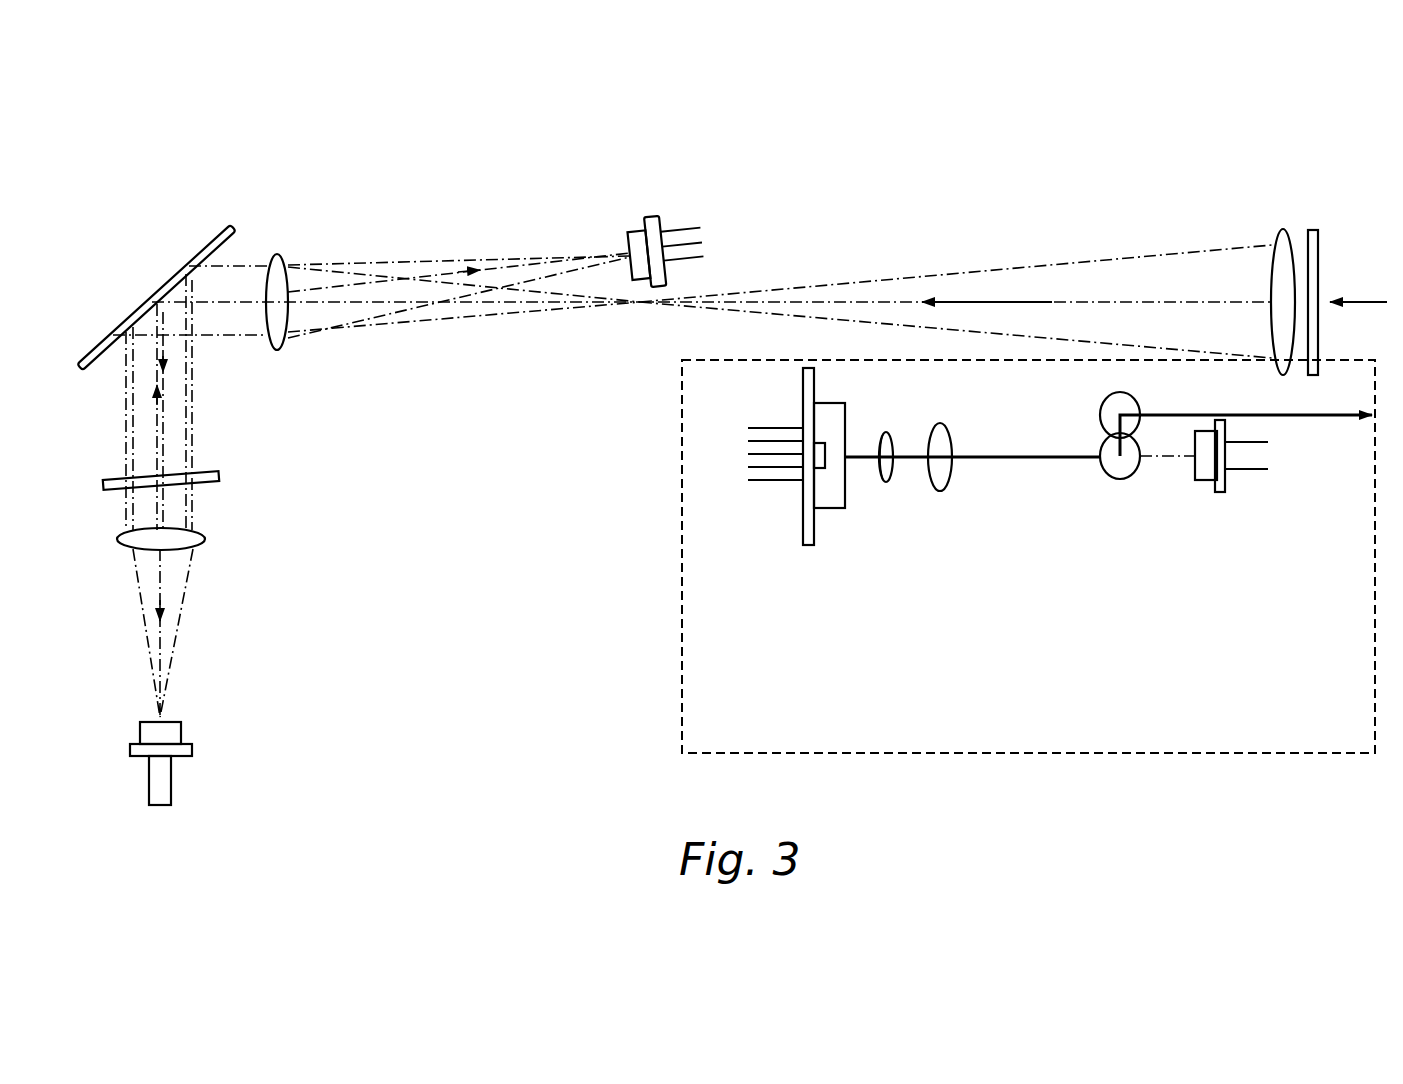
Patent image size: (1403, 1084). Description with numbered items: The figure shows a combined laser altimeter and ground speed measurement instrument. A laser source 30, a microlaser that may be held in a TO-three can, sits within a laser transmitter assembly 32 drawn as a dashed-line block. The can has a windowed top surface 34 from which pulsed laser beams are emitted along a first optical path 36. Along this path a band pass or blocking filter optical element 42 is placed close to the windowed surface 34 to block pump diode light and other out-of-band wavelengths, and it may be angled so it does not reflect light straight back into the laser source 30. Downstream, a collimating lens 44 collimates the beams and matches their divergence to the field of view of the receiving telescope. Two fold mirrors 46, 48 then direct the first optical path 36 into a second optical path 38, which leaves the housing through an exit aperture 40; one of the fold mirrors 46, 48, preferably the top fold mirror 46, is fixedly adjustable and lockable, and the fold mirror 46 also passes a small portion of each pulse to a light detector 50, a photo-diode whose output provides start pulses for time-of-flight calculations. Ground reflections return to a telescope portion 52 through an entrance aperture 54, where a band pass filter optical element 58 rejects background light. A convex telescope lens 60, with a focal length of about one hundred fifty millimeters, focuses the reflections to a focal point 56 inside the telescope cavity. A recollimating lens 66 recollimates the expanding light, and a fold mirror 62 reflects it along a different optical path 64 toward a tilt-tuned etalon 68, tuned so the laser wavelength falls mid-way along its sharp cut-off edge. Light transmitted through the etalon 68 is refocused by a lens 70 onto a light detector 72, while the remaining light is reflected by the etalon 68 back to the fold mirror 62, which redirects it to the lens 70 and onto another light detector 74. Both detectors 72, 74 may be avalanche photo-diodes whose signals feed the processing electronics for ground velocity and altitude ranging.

The laser source 30 is at (797, 562).
The laser transmitter assembly 32 is at (680, 570).
The windowed top surface 34 is at (845, 492).
The first optical path 36 is at (862, 453).
The second optical path 38 is at (1262, 413).
The exit aperture 40 is at (1370, 423).
The band pass or blocking filter optical element 42 is at (893, 445).
The collimating lens 44 is at (952, 477).
The fold mirror 46 is at (1112, 480).
The fold mirror 48 is at (1105, 403).
The light detector 50 is at (1215, 507).
The telescope portion 52 is at (810, 263).
The entrance aperture 54 is at (1337, 223).
The focal point 56 is at (640, 304).
The band pass filter optical element 58 is at (1313, 228).
The telescope lens 60 is at (1270, 280).
The fold mirror 62 is at (202, 253).
The optical path 64 is at (214, 422).
The recollimating lens 66 is at (278, 254).
The tilt-tuned etalon 68 is at (205, 490).
The lens 70 is at (196, 544).
The light detector 72 is at (201, 726).
The light detector 74 is at (630, 218).